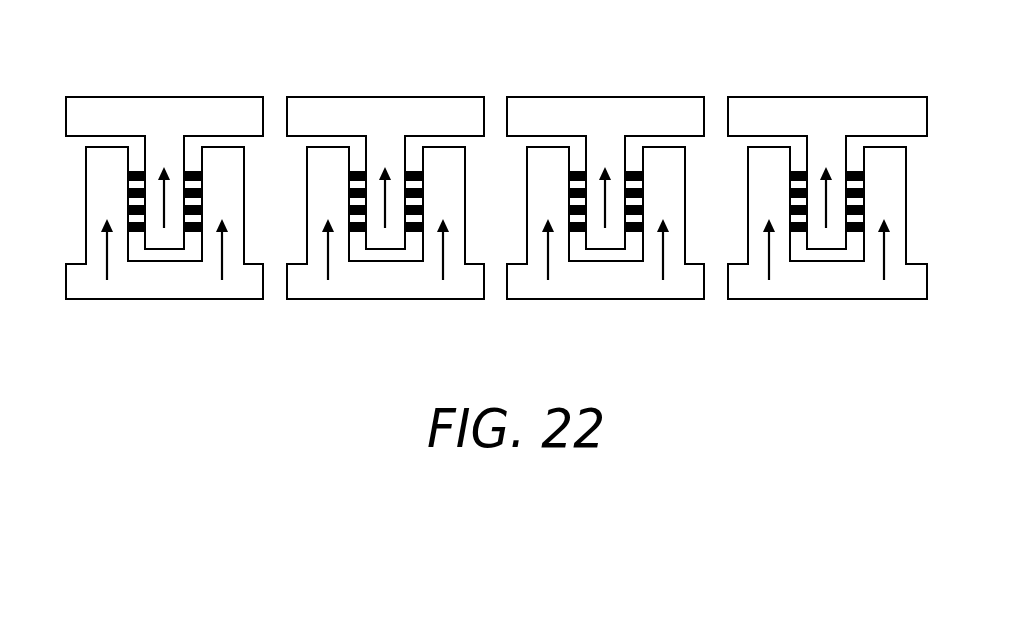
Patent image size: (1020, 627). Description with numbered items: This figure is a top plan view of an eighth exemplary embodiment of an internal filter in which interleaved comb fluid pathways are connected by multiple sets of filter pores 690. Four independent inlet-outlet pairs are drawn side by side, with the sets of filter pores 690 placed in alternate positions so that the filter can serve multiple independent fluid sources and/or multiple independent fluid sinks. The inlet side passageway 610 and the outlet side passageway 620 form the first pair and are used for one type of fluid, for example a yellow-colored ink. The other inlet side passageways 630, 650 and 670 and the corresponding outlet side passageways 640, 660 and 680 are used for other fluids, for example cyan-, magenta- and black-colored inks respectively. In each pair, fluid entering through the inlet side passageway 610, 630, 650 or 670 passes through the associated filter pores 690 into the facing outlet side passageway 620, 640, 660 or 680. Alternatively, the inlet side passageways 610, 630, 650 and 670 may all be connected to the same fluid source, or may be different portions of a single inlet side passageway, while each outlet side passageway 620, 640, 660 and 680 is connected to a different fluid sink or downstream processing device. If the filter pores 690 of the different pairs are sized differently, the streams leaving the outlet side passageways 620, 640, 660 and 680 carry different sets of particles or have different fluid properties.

The inlet side passageway 610 is at (163, 300).
The outlet side passageway 620 is at (163, 97).
The inlet side passageway 630 is at (384, 300).
The outlet side passageway 640 is at (384, 97).
The inlet side passageway 650 is at (605, 300).
The outlet side passageway 660 is at (605, 97).
The inlet side passageway 670 is at (835, 300).
The outlet side passageway 680 is at (835, 97).
The filter pores 690 is at (128, 227).